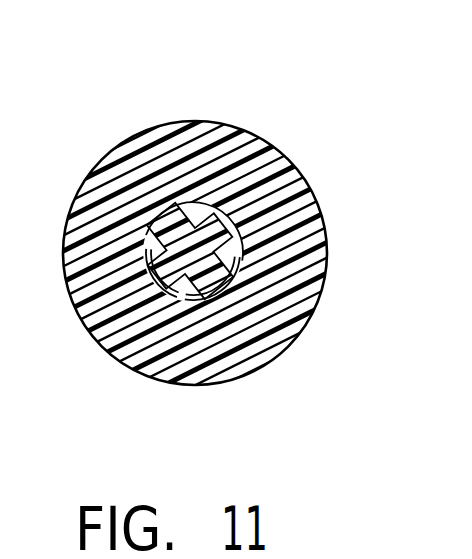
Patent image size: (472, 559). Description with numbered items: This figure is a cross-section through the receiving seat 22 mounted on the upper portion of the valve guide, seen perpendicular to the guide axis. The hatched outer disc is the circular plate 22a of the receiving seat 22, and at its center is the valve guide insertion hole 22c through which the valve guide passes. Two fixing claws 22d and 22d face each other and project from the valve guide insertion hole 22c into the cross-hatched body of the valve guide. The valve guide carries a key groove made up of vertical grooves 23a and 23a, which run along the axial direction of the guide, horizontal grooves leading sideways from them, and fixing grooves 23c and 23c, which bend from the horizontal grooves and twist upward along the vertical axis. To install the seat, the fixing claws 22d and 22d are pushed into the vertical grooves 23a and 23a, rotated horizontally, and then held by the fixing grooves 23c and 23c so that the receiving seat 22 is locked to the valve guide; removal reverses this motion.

The receiving seat 22 is at (186, 60).
The circular plate 22a is at (267, 165).
The valve guide insertion hole 22c is at (250, 235).
The fixing claws 22d is at (150, 286).
The vertical grooves 23a is at (205, 213).
The fixing grooves 23c is at (145, 217).